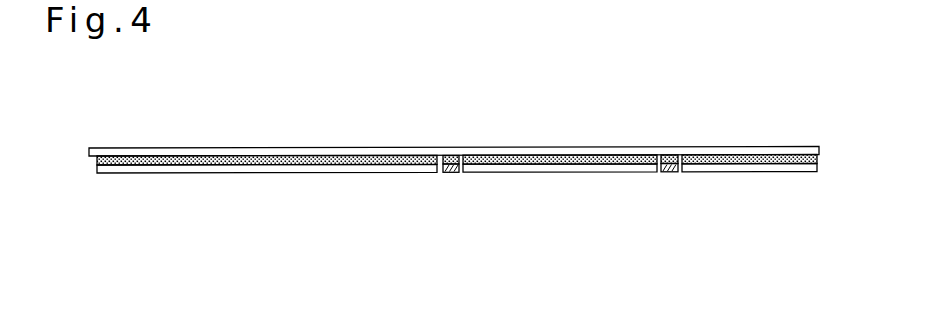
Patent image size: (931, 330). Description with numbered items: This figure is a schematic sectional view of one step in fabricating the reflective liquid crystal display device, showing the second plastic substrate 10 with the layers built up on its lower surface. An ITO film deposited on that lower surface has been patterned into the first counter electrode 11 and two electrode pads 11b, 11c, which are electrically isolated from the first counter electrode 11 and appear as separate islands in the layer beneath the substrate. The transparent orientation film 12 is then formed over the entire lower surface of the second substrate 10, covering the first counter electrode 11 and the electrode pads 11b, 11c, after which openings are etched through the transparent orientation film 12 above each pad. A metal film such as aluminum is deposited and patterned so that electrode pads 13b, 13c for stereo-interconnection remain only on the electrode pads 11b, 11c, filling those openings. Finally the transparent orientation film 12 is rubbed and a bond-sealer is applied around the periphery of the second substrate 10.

The second plastic substrate 10 is at (140, 148).
The first counter electrode 11 is at (819, 158).
The transparent orientation film 12 is at (178, 173).
The electrode pad 11b is at (452, 156).
The electrode pad 11c is at (670, 156).
The electrode pad for stereo-interconnection 13b is at (451, 173).
The electrode pad for stereo-interconnection 13c is at (667, 173).